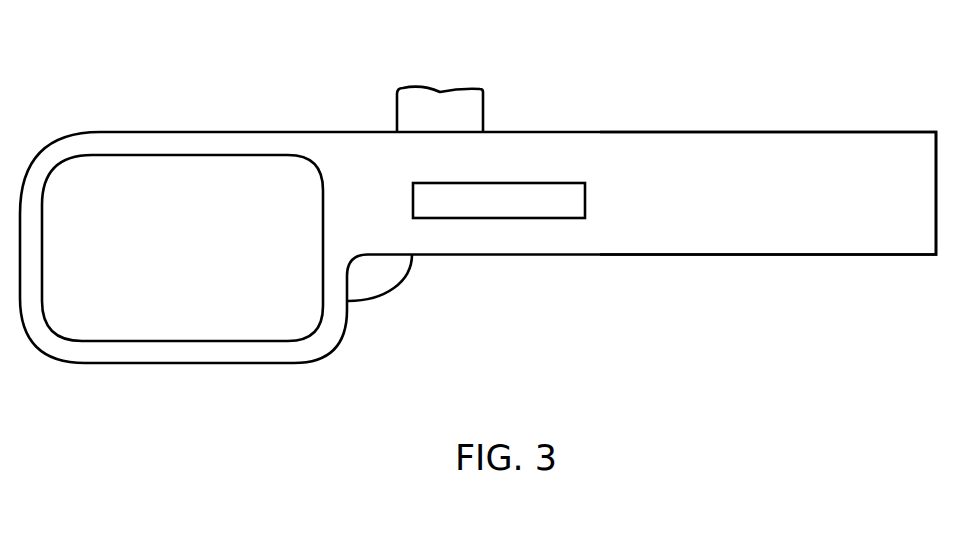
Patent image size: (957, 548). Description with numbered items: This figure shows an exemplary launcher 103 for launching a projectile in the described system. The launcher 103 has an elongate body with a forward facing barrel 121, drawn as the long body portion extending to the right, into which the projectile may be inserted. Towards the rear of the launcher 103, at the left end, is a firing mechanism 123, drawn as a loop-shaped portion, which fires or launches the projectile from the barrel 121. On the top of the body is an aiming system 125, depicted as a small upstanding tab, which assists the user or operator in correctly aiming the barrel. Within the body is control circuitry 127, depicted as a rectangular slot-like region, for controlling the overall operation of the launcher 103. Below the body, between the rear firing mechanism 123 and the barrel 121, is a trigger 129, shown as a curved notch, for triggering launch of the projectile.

The launcher 103 is at (702, 132).
The forward facing barrel 121 is at (735, 255).
The firing mechanism 123 is at (107, 157).
The aiming system 125 is at (433, 90).
The control circuitry 127 is at (535, 218).
The trigger 129 is at (392, 292).